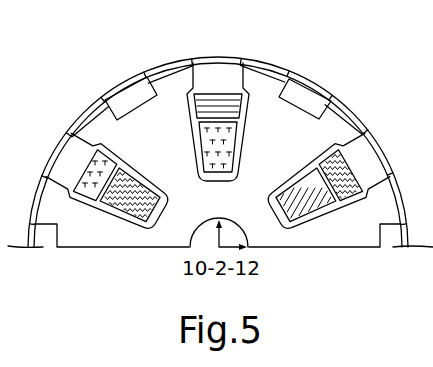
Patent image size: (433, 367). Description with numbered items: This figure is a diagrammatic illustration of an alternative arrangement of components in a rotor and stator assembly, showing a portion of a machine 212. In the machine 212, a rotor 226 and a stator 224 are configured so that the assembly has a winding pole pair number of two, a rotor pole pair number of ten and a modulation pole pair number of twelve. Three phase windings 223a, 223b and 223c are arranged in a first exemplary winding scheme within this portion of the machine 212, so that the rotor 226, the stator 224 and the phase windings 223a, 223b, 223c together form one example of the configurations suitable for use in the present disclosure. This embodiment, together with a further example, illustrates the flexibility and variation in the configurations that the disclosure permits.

The machine 212 is at (74, 62).
The rotor 226 is at (220, 57).
The phase winding 223a is at (200, 140).
The phase winding 223b is at (111, 212).
The phase winding 223c is at (237, 118).
The stator 224 is at (77, 230).